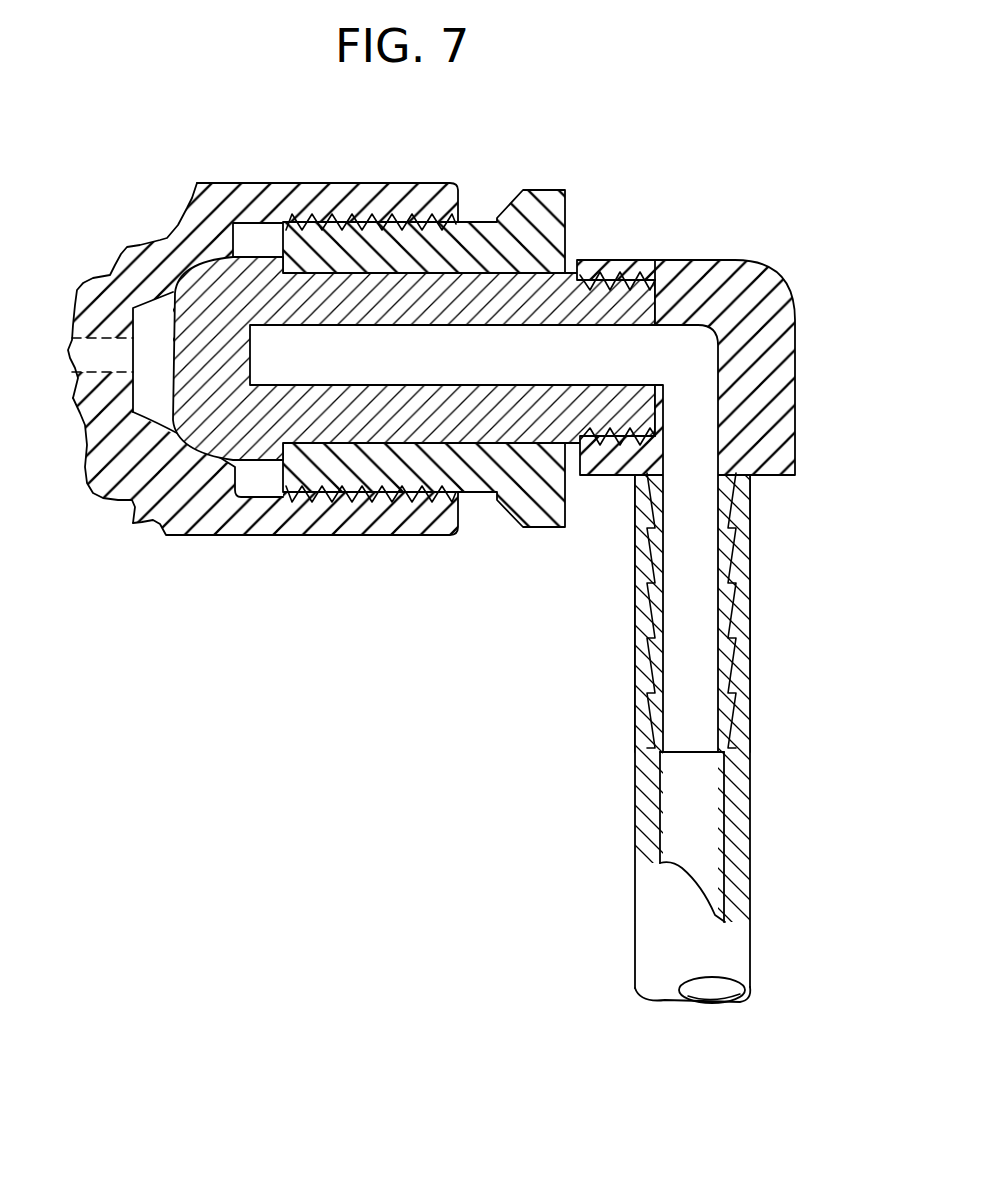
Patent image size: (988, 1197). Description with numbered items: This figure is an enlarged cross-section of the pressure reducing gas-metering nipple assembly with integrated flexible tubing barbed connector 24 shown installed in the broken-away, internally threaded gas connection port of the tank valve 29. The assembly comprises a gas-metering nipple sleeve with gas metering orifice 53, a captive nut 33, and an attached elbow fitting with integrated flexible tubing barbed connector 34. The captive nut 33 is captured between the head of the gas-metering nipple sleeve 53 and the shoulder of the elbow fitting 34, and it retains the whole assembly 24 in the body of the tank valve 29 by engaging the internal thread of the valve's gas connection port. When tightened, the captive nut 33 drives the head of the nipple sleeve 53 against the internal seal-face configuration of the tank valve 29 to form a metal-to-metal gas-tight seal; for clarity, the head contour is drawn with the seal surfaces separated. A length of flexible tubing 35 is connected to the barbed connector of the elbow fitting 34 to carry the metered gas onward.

The pressure reducing gas-metering nipple assembly with integrated flexible tubing b 24 is at (752, 124).
The tank valve 29 is at (228, 183).
The captive nut 33 is at (517, 505).
The elbow fitting with integrated flexible tubing barbed connector 34 is at (797, 400).
The flexible tubing 35 is at (753, 807).
The gas-metering nipple sleeve with gas metering orifice 53 is at (84, 470).